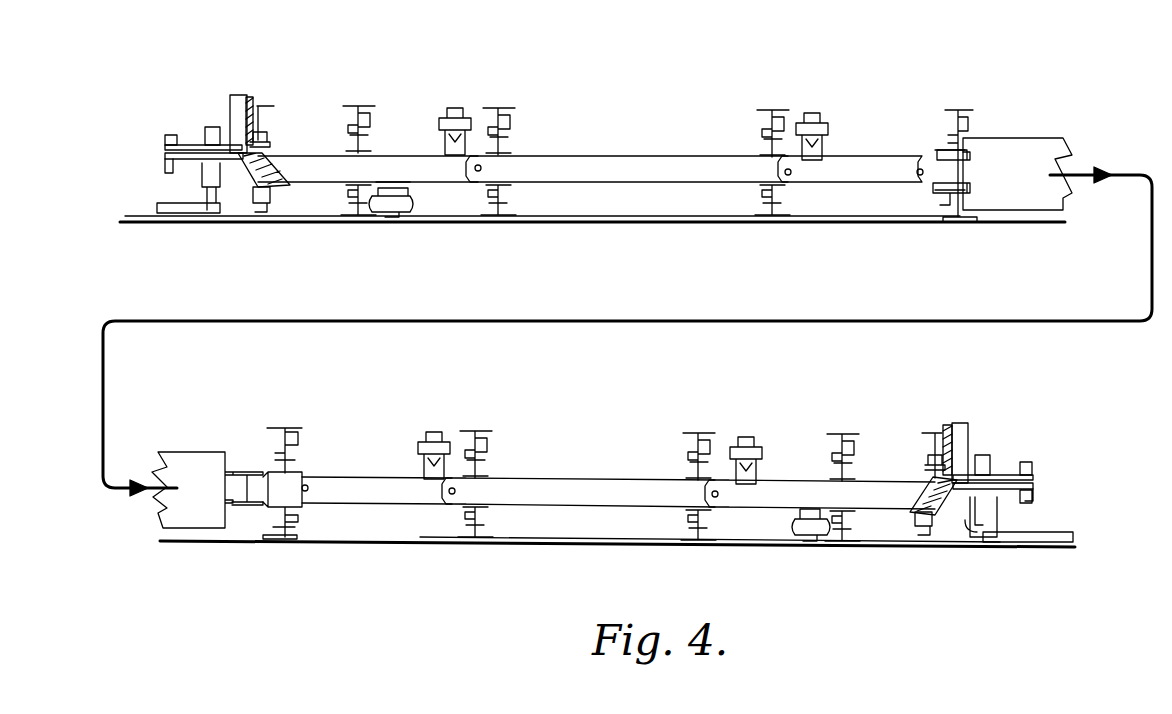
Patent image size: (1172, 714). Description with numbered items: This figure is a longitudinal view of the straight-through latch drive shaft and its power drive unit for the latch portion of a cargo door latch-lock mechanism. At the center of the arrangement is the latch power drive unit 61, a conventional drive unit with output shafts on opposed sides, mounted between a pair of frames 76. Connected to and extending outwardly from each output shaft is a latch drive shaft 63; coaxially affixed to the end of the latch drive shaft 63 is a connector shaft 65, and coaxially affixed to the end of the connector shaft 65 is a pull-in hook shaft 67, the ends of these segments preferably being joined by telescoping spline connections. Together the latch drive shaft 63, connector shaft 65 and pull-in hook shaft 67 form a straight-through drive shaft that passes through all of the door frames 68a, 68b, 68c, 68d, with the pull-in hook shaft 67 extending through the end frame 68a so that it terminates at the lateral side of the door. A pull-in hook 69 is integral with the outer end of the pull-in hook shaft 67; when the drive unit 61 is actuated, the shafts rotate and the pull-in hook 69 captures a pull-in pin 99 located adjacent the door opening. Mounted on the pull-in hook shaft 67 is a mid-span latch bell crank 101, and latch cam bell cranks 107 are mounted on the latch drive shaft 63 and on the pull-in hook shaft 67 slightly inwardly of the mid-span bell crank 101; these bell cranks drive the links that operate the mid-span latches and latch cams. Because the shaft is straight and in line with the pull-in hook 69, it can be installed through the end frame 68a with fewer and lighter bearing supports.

The latch power drive unit 61 is at (1012, 138).
The latch drive shaft 63 is at (866, 158).
The connector shaft 65 is at (617, 156).
The pull-in hook shaft 67 is at (312, 156).
The end frame 68a is at (268, 106).
The frame 68b is at (360, 106).
The frame 68c is at (500, 107).
The frame 68d is at (770, 110).
The pull-in hook 69 is at (233, 95).
The frame 76 is at (960, 110).
The pull-in pin 99 is at (186, 143).
The mid-span latch bell crank 101 is at (398, 190).
The latch cam bell crank 107 is at (455, 108).